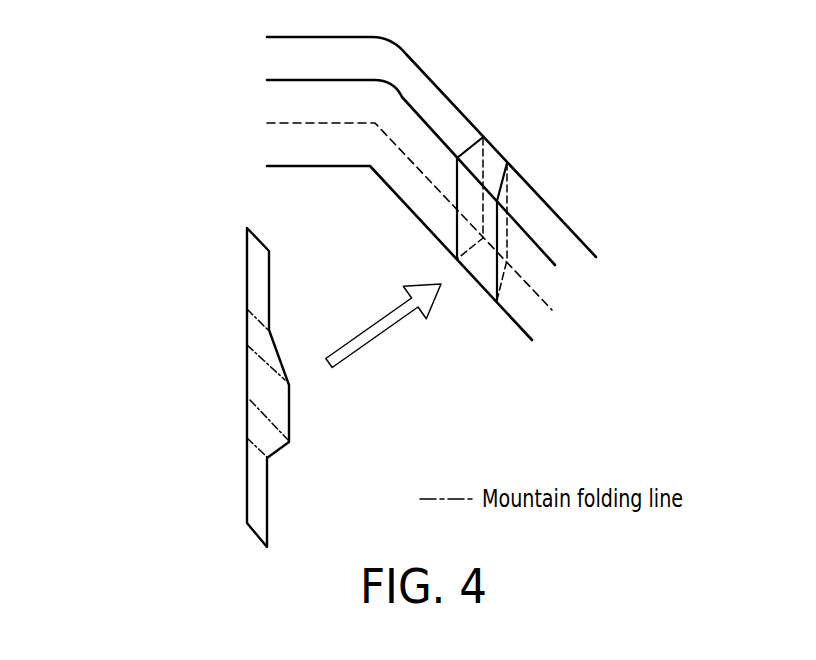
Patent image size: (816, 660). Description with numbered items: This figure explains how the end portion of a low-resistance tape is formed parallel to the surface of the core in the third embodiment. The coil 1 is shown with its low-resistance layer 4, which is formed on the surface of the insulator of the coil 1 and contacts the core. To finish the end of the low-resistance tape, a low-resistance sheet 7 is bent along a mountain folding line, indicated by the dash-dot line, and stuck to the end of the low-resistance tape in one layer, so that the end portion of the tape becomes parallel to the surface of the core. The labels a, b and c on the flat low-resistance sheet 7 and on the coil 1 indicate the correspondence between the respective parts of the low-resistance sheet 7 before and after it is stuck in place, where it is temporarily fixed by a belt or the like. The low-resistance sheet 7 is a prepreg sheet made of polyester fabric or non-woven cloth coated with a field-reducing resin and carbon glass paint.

The coil 1 is at (597, 245).
The low-resistance layer 4 is at (437, 101).
The low-resistance sheet 7 is at (258, 497).